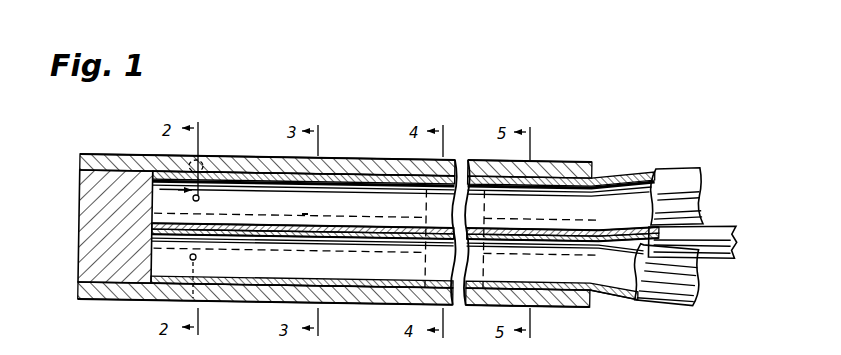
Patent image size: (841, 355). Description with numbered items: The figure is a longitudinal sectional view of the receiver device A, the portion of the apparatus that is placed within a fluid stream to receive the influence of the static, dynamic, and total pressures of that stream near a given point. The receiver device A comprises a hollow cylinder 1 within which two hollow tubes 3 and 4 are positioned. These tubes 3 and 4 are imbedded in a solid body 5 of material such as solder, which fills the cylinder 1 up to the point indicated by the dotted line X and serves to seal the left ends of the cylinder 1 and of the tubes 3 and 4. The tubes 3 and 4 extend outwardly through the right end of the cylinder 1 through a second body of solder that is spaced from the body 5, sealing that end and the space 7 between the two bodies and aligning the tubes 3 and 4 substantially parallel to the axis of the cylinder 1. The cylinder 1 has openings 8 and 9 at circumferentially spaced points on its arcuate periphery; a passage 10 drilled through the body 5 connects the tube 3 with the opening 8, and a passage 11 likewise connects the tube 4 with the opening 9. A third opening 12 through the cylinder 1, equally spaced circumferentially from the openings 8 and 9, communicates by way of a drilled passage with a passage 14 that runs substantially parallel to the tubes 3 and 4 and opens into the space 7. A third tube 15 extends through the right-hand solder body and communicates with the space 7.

The hollow cylinder 1 is at (369, 146).
The hollow tube 3 is at (406, 183).
The hollow tube 4 is at (376, 282).
The solid body of material 5 is at (81, 266).
The space 7 is at (452, 200).
The opening 8 is at (200, 162).
The opening 9 is at (196, 298).
The passage 10 is at (186, 156).
The passage 11 is at (198, 262).
The third opening 12 is at (207, 212).
The passage 14 is at (303, 214).
The third tube 15 is at (720, 233).
The dotted line X is at (423, 260).
The receiver device A is at (269, 104).